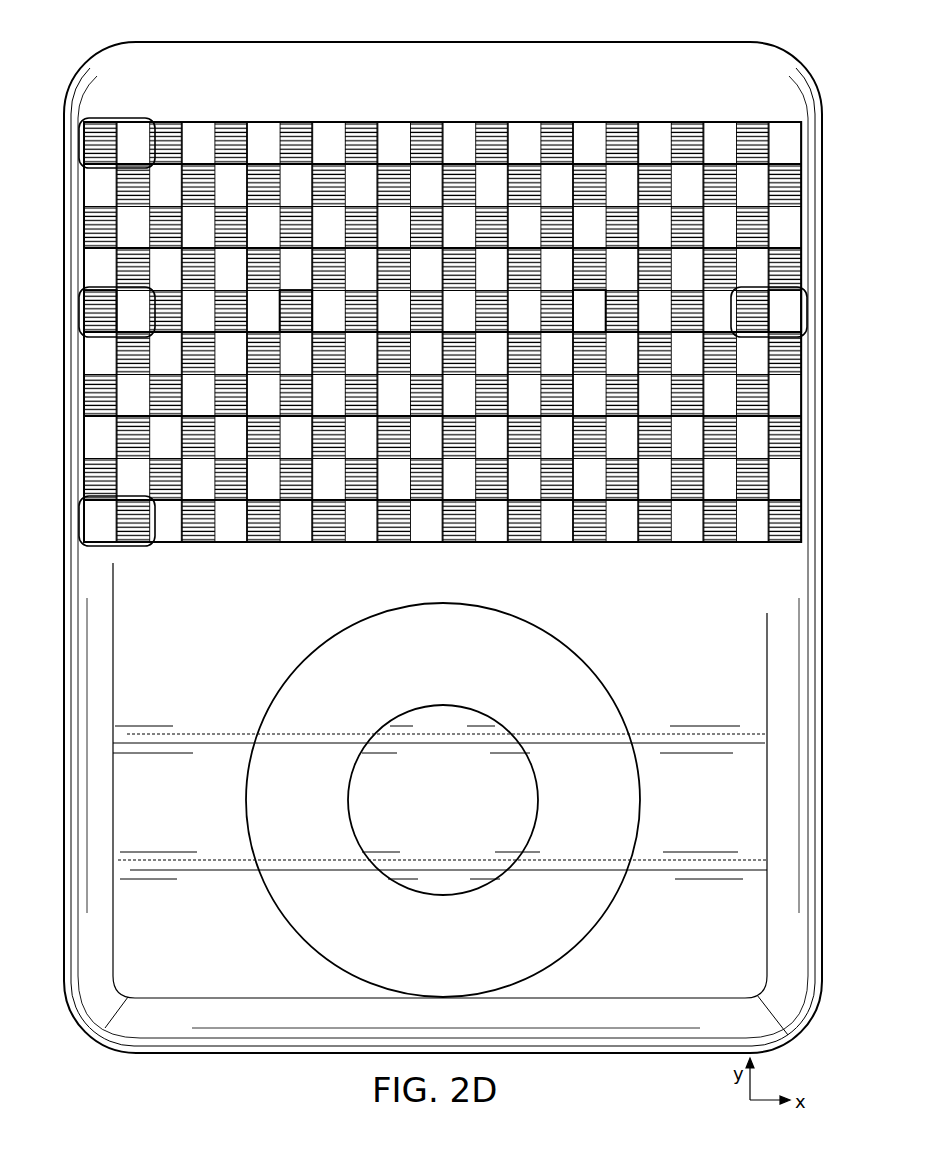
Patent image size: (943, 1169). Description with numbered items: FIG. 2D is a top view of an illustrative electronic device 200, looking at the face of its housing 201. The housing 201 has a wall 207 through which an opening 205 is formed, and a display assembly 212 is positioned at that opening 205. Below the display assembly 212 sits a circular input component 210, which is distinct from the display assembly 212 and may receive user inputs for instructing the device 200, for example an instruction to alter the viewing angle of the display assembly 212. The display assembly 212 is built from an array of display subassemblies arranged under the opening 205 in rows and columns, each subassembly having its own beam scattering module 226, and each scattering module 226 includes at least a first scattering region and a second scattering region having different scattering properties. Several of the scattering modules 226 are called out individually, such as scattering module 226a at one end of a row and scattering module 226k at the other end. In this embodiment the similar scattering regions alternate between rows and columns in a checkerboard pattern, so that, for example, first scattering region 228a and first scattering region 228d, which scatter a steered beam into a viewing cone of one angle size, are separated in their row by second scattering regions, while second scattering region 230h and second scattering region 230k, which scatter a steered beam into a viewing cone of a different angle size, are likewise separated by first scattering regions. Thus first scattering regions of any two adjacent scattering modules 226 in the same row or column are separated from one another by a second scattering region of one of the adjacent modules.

The electronic device 200 is at (612, 1094).
The housing 201 is at (110, 1058).
The opening 205 is at (460, 120).
The wall 207 is at (183, 1025).
The input component 210 is at (335, 932).
The display assembly 212 is at (418, 98).
The beam scattering module 226 is at (120, 119).
The scattering module 226a is at (80, 306).
The scattering module 226k is at (808, 294).
The first scattering region 228a is at (115, 320).
The first scattering region 228d is at (310, 320).
The second scattering region 230h is at (604, 320).
The second scattering region 230k is at (799, 320).